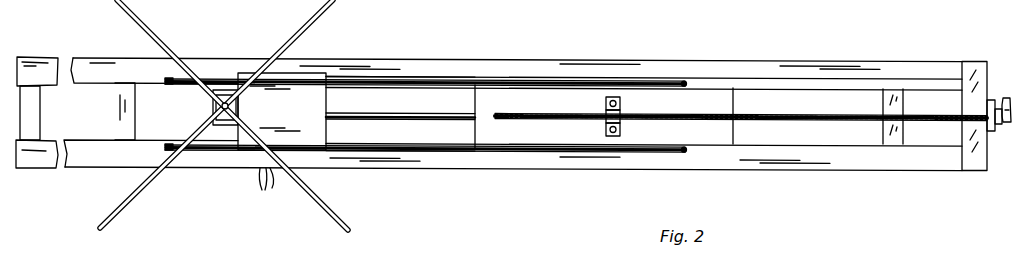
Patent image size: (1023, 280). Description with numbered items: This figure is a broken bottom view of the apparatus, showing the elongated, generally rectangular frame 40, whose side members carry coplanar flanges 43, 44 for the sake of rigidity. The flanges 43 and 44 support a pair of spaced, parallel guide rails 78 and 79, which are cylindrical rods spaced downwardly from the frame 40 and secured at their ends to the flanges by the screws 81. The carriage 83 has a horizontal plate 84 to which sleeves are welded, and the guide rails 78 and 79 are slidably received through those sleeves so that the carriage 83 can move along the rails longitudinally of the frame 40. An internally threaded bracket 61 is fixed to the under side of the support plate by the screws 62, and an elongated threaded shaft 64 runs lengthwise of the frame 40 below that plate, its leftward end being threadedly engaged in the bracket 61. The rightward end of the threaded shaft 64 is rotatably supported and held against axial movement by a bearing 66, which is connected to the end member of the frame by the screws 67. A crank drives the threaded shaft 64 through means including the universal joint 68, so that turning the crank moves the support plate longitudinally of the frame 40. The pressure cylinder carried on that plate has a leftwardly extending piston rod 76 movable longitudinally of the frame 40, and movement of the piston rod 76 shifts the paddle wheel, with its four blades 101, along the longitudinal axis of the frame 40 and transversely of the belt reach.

The frame 40 is at (958, 50).
The flange 43 is at (916, 160).
The flange 44 is at (935, 72).
The internally threaded bracket 61 is at (622, 103).
The screws 62 is at (622, 128).
The threaded shaft 64 is at (680, 116).
The bearing 66 is at (991, 132).
The screws 67 is at (998, 131).
The universal joint 68 is at (1009, 97).
The piston rod 76 is at (437, 114).
The guide rail 78 is at (352, 82).
The guide rail 79 is at (478, 146).
The screws 81 is at (165, 80).
The carriage 83 is at (298, 68).
The horizontal plate 84 is at (269, 131).
The blades 101 is at (153, 31).